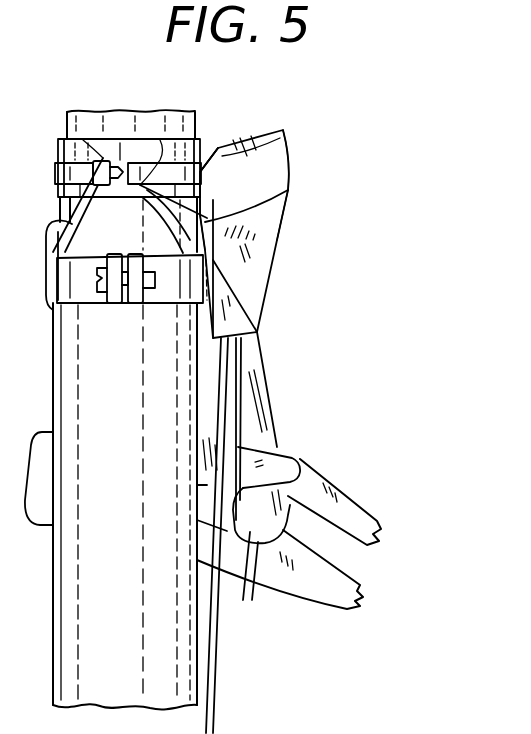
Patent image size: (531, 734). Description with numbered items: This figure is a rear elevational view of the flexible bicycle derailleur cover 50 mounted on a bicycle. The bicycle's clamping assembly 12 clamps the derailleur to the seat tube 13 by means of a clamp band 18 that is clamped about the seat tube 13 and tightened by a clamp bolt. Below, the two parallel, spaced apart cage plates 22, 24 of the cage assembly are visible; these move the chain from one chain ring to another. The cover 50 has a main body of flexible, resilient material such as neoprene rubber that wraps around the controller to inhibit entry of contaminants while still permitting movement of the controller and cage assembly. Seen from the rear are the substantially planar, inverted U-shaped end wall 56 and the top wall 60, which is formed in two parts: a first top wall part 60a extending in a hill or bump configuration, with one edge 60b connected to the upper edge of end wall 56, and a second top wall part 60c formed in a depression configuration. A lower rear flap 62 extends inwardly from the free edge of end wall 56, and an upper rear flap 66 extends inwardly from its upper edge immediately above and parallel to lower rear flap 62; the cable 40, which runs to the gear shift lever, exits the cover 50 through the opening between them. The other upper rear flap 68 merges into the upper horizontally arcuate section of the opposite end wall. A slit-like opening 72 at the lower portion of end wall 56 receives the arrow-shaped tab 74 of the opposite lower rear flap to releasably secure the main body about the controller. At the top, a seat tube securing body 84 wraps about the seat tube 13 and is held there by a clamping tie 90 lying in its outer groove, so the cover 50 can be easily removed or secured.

The clamping assembly 12 is at (128, 310).
The seat tube 13 is at (65, 653).
The clamp band 18 is at (87, 292).
The cage plate 22 is at (322, 588).
The cage plate 24 is at (350, 506).
The cable 40 is at (214, 683).
The cover 50 is at (308, 158).
The end wall 56 is at (248, 397).
The top wall 60 is at (263, 121).
The first top wall part 60a is at (242, 157).
The edge 60b is at (283, 130).
The second top wall part 60c is at (211, 163).
The lower rear flap 62 is at (205, 485).
The upper rear flap 66 is at (262, 256).
The upper rear flap 68 is at (60, 205).
The slit-like opening 72 is at (246, 563).
The tab 74 is at (283, 463).
The seat tube securing body 84 is at (53, 145).
The clamping tie 90 is at (163, 165).